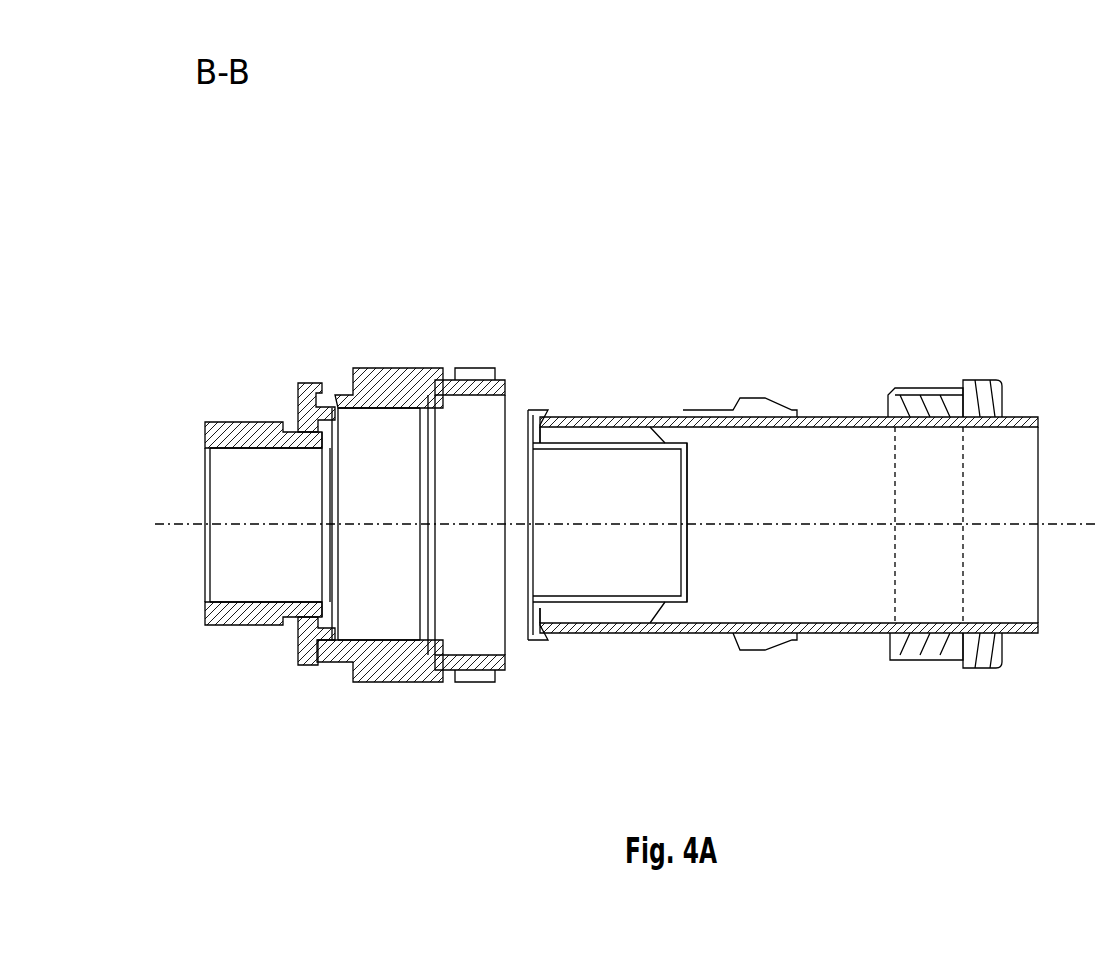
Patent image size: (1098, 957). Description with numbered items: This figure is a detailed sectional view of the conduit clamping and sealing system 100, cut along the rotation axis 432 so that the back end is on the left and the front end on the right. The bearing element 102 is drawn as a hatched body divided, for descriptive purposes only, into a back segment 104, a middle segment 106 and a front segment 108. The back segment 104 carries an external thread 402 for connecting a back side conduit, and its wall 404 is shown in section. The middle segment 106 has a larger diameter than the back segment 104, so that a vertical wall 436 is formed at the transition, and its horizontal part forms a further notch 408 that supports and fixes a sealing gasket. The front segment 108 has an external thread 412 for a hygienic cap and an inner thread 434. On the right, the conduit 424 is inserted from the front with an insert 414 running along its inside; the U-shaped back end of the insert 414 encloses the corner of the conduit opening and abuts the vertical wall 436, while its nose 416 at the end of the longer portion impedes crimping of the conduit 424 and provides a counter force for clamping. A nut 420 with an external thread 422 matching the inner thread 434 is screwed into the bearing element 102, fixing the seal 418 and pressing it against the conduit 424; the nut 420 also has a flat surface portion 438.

The conduit clamping and sealing system 100 is at (878, 237).
The bearing element 102 is at (410, 683).
The back segment 104 is at (219, 308).
The middle segment 106 is at (406, 297).
The front segment 108 is at (467, 327).
The external thread 402 is at (220, 425).
The tube wall 404 is at (290, 428).
The further notch 408 is at (340, 365).
The external thread 412 is at (480, 360).
The insert 414 is at (582, 435).
The nose 416 is at (655, 435).
The seal 418 is at (748, 396).
The nut 420 is at (950, 362).
The external thread 422 is at (925, 665).
The conduit 424 is at (643, 635).
The rotation axis 432 is at (188, 522).
The inner thread 434 is at (440, 655).
The vertical wall 436 is at (340, 418).
The flat surface portion 438 is at (995, 672).